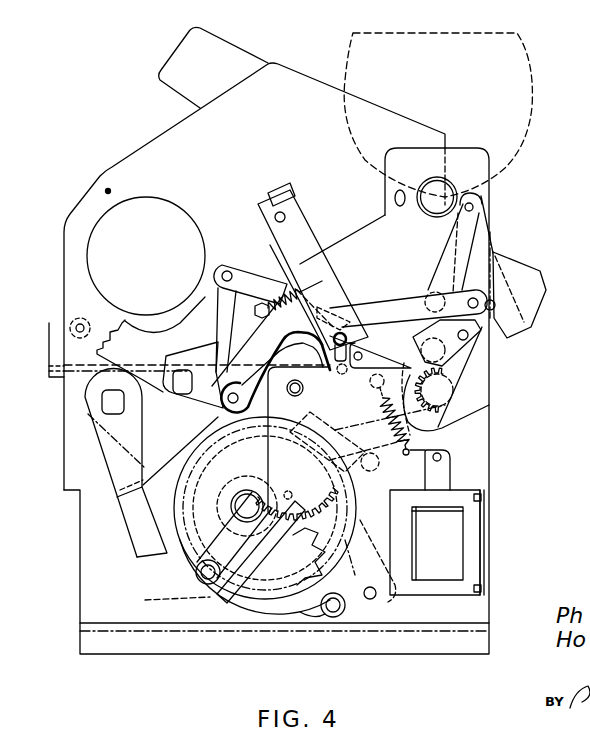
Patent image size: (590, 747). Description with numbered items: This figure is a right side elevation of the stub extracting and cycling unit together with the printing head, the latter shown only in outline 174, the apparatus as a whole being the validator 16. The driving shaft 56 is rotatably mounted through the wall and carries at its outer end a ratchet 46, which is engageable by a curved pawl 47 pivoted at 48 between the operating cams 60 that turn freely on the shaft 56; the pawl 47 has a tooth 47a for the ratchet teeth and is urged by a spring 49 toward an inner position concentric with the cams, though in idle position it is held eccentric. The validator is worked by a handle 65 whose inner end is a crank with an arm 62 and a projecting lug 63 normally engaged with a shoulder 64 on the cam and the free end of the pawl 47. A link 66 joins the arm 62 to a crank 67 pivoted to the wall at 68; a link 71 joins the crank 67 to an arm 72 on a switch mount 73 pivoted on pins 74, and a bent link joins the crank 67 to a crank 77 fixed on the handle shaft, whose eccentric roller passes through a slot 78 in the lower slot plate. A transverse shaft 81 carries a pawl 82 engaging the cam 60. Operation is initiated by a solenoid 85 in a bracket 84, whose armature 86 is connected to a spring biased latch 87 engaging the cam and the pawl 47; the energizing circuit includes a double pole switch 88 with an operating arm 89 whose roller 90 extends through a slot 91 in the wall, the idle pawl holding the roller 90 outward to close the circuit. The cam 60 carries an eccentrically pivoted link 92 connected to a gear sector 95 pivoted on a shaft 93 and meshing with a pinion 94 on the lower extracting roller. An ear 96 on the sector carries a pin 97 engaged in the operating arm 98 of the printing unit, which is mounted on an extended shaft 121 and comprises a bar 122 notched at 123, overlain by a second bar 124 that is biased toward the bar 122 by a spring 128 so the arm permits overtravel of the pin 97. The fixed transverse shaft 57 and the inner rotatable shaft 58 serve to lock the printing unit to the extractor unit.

The hopper outline 174 is at (527, 96).
The inner rotatable shaft 58 is at (450, 196).
The arm 72 is at (480, 227).
The link 71 is at (455, 220).
The switch mount 73 is at (533, 292).
The pins 74 is at (493, 306).
The crank 67 is at (455, 330).
The pivot 68 is at (457, 362).
The pinion 94 is at (437, 408).
The gear sector 95 is at (423, 452).
The latch 87 is at (450, 458).
The armature 86 is at (440, 480).
The bracket 84 is at (473, 517).
The solenoid 85 is at (453, 550).
The double pole switch 88 is at (390, 603).
The operating arm 89 is at (350, 597).
The slot 91 is at (340, 613).
The roller 90 is at (317, 618).
The pawl 47 is at (257, 613).
The ratchet 46 is at (218, 602).
The pawl pivot 48 is at (168, 598).
The link 92 is at (190, 540).
The pawl 82 is at (135, 517).
The shaft 81 is at (106, 402).
The outer fixed transverse shaft 57 is at (76, 324).
The handle 65 is at (125, 320).
The arm 62 is at (203, 302).
The link 66 is at (254, 280).
The crank 77 is at (233, 330).
The slot 78 is at (226, 314).
The adjusting screw 16 is at (270, 330).
The second bar 124 is at (312, 338).
The extended shaft 121 is at (298, 210).
The bar 122 is at (300, 232).
The spring 128 is at (282, 292).
The notch 123 is at (326, 318).
The operating arm 98 is at (348, 322).
The ear 96 is at (372, 345).
The pin 97 is at (340, 375).
The shaft 93 is at (299, 393).
The lug 63 is at (218, 418).
The operating cam 60 is at (185, 465).
The shaft 56 is at (250, 492).
The shoulder 64 is at (293, 480).
The spring 49 is at (387, 422).
The tooth 47a is at (288, 545).